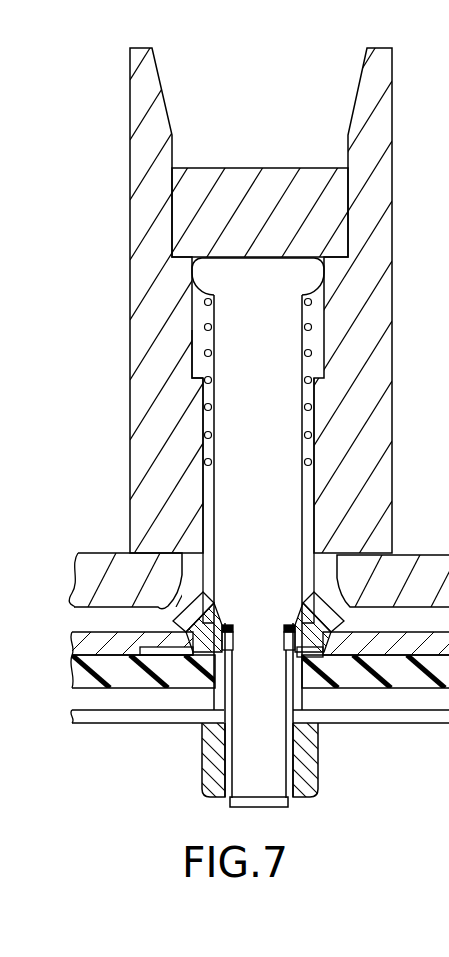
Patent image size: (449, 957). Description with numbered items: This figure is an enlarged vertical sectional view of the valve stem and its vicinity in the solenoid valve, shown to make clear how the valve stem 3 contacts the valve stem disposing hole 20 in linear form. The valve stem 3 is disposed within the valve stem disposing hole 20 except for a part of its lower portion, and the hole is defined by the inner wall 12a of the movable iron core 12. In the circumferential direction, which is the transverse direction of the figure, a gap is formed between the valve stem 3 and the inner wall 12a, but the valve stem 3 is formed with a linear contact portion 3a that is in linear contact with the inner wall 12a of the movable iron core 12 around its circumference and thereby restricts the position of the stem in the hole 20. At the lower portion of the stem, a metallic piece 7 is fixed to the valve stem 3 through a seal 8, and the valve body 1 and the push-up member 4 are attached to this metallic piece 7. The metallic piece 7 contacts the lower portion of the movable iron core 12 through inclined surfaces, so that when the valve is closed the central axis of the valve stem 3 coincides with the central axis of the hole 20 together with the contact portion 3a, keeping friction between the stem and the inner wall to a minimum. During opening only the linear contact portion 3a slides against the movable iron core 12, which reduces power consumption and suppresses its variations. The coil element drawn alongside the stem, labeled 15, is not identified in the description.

The valve body 1 is at (367, 688).
The valve stem 3 is at (290, 405).
The linear contact portion 3a is at (313, 270).
The push-up member 4 is at (385, 717).
The metallic piece 7 is at (340, 612).
The seal 8 is at (285, 625).
The movable iron core 12 is at (166, 110).
The inner wall 12a is at (195, 314).
The spring 15 is at (308, 325).
The valve stem disposing hole 20 is at (198, 357).